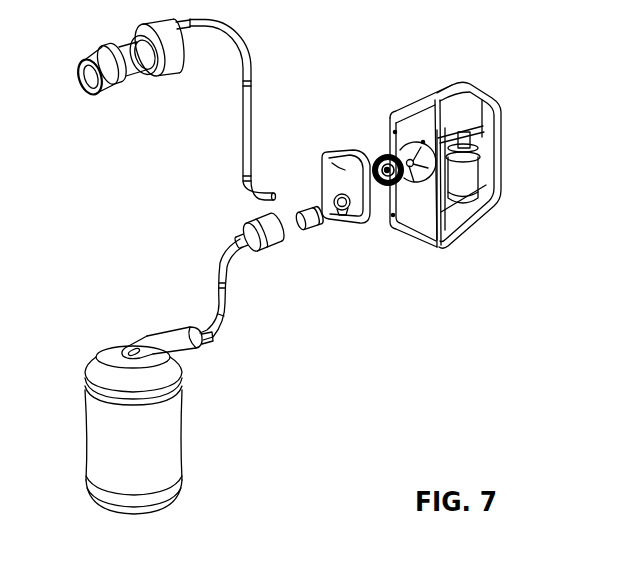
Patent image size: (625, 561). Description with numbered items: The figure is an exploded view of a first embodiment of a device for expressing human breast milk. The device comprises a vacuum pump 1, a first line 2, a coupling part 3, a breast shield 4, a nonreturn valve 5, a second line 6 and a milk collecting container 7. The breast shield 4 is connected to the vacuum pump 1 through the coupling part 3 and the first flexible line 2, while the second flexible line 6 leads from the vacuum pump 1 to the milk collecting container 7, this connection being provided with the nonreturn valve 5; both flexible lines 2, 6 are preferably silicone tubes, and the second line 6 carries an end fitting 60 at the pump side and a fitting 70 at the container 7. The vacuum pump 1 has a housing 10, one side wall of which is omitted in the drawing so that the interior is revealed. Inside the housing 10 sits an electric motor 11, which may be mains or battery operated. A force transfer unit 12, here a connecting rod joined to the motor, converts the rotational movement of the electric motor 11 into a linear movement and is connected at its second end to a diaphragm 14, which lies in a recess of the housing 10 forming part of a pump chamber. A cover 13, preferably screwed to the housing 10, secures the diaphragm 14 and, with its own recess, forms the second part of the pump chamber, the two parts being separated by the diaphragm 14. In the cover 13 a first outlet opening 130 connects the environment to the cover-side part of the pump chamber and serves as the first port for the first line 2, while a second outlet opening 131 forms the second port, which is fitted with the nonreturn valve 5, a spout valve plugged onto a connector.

The vacuum pump 1 is at (476, 146).
The first line 2 is at (252, 86).
The coupling part 3 is at (165, 88).
The breast shield 4 is at (115, 104).
The nonreturn valve 5 is at (312, 229).
The second line 6 is at (219, 296).
The milk collecting container 7 is at (161, 437).
The housing 10 is at (502, 96).
The electric motor 11 is at (468, 177).
The force transfer unit 12 is at (415, 178).
The cover 13 is at (322, 153).
The diaphragm 14 is at (380, 150).
The connector 60 is at (250, 221).
The nozzle cap 70 is at (195, 356).
The first outlet opening 130 is at (340, 171).
The second outlet opening 131 is at (343, 214).